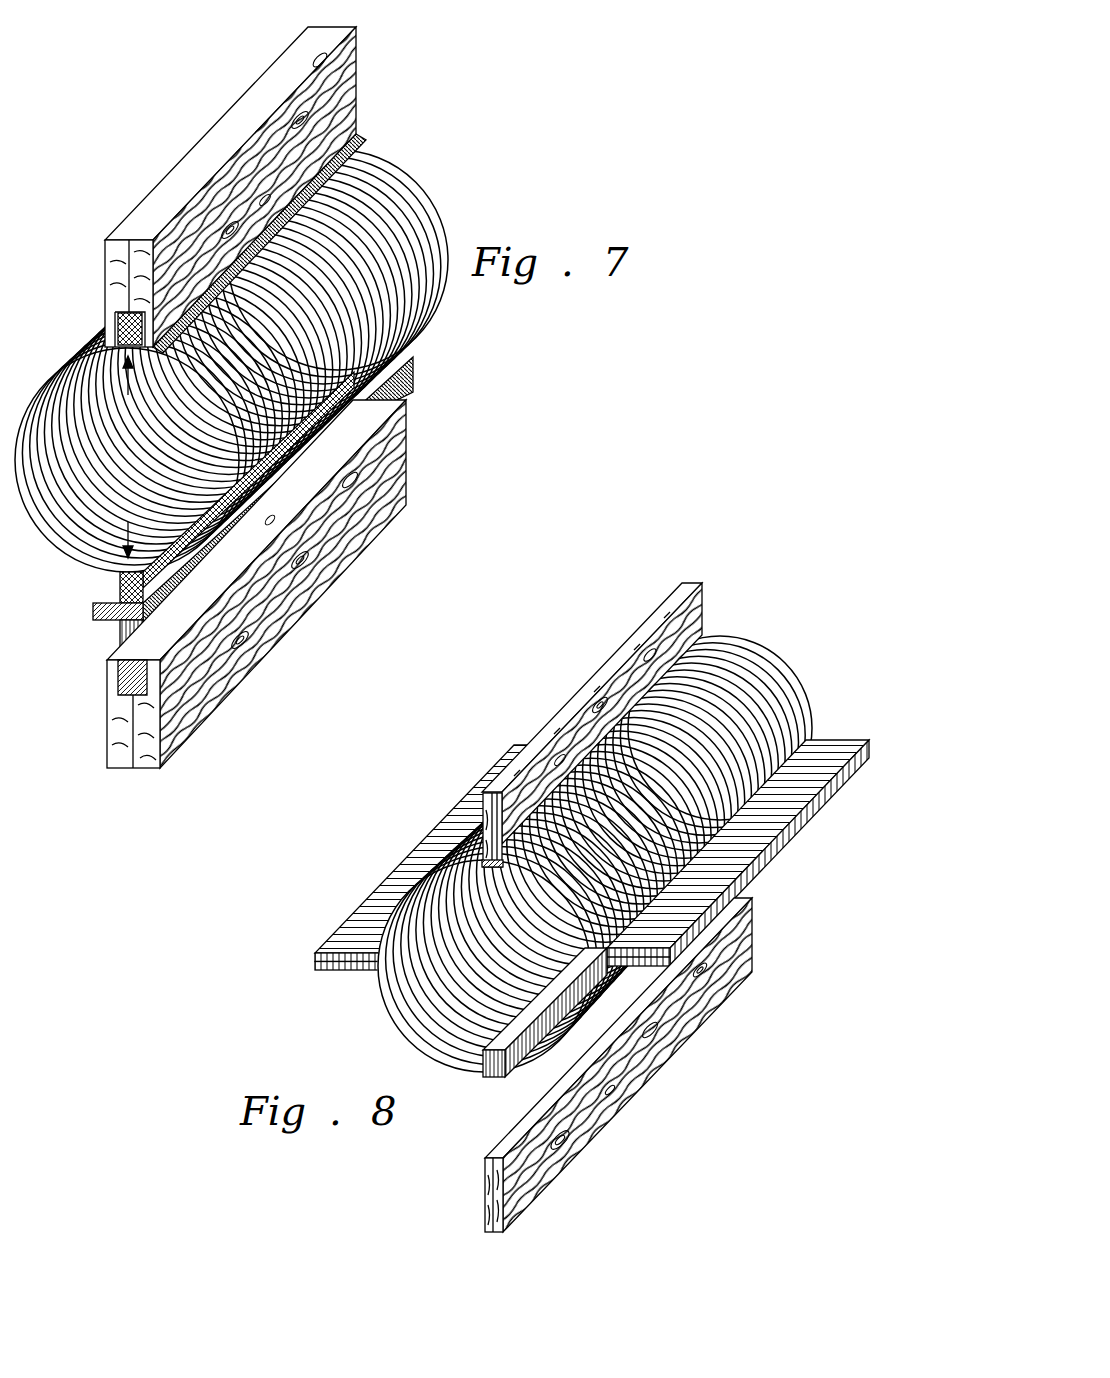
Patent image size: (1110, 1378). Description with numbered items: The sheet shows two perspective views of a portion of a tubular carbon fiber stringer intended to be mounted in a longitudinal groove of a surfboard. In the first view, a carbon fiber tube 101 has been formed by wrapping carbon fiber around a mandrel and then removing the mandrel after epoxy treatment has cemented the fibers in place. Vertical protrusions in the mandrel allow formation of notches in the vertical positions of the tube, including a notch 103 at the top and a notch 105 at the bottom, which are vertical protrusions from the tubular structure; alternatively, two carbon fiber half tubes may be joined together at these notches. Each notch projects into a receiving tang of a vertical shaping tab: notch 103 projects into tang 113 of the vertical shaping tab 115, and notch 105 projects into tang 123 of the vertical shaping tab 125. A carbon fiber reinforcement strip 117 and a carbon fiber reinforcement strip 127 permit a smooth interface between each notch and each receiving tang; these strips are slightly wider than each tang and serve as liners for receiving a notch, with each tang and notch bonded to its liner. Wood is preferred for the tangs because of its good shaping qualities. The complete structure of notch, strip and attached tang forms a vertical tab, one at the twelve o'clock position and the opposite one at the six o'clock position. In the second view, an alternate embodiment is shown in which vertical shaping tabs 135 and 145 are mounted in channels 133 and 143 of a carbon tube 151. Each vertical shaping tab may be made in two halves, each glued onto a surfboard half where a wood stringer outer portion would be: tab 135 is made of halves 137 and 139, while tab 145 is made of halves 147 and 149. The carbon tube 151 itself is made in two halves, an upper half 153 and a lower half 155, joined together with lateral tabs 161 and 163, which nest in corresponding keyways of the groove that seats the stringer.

In FIG. 7, the carbon fiber tube 101 is at (430, 186).
In FIG. 7, the notch 103 is at (133, 389).
In FIG. 7, the notch 105 is at (133, 528).
In FIG. 7, the tang 113 is at (113, 328).
In FIG. 7, the vertical shaping tab 115 is at (356, 58).
In FIG. 7, the carbon fiber reinforcement strip 117 is at (358, 136).
In FIG. 7, the tang 123 is at (107, 690).
In FIG. 7, the vertical shaping tab 125 is at (407, 493).
In FIG. 7, the carbon fiber reinforcement strip 127 is at (100, 612).
In FIG. 8, the channel 133 is at (493, 870).
In FIG. 8, the vertical shaping tab 135 is at (704, 620).
In FIG. 8, the half 137 is at (483, 797).
In FIG. 8, the half 139 is at (558, 730).
In FIG. 8, the channel 143 is at (484, 1048).
In FIG. 8, the vertical shaping tab 145 is at (753, 950).
In FIG. 8, the half 147 is at (485, 1225).
In FIG. 8, the half 149 is at (505, 1218).
In FIG. 8, the carbon tube 151 is at (795, 692).
In FIG. 8, the upper half 153 is at (348, 900).
In FIG. 8, the lower half 155 is at (345, 980).
In FIG. 8, the lateral tab 161 is at (330, 950).
In FIG. 8, the lateral tab 163 is at (838, 799).